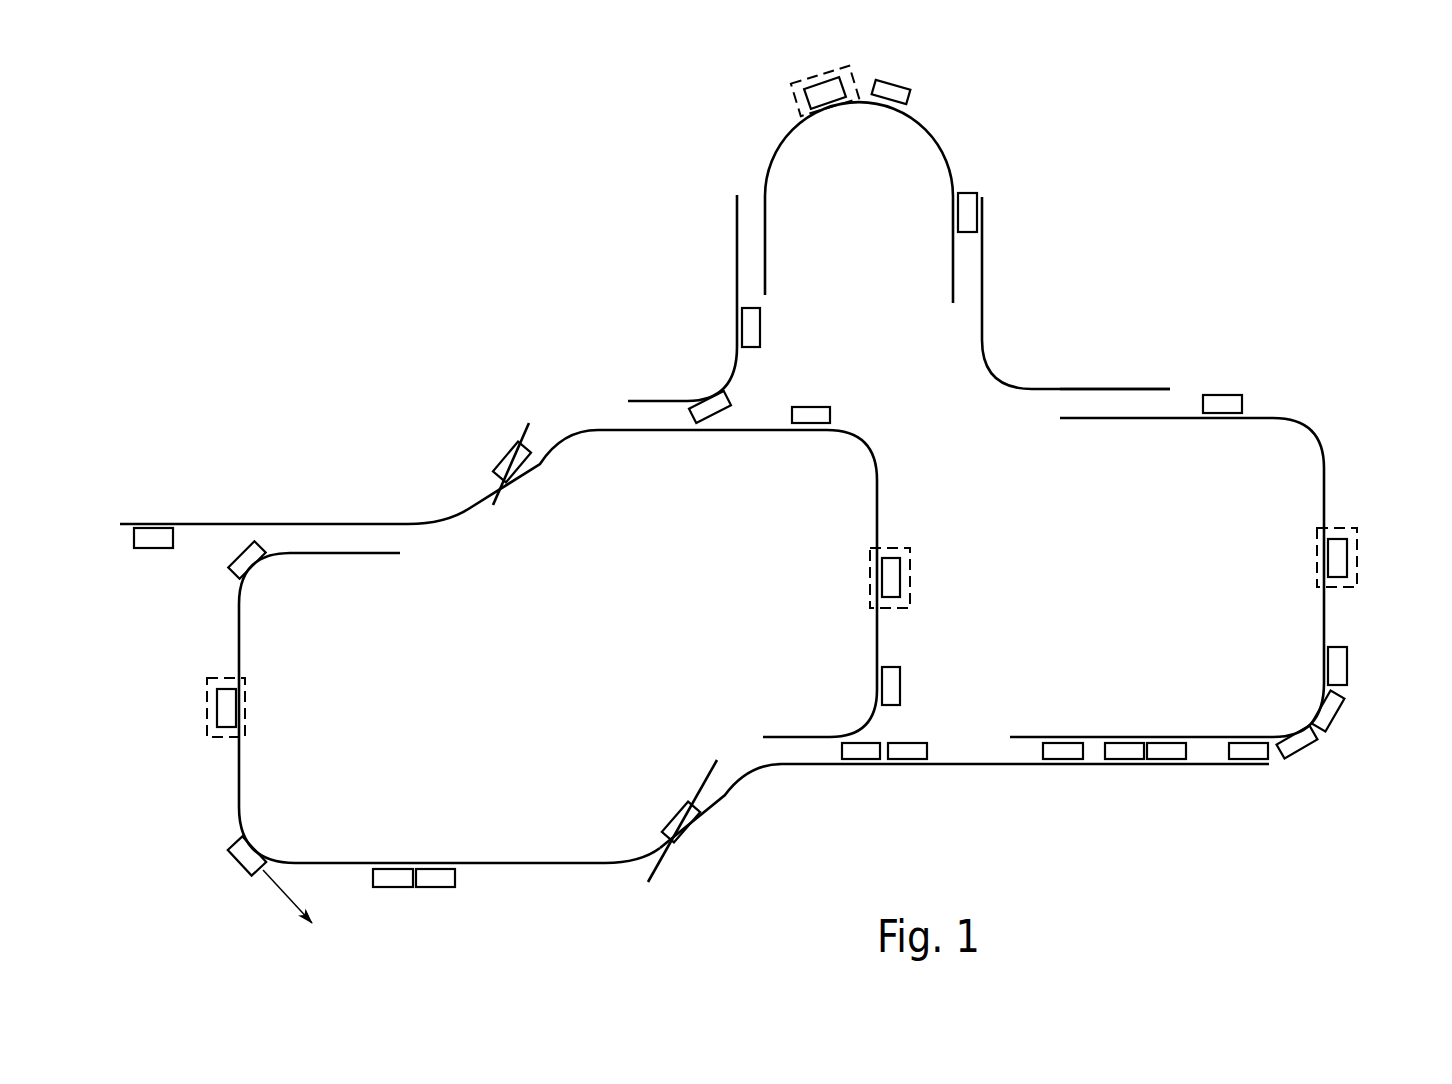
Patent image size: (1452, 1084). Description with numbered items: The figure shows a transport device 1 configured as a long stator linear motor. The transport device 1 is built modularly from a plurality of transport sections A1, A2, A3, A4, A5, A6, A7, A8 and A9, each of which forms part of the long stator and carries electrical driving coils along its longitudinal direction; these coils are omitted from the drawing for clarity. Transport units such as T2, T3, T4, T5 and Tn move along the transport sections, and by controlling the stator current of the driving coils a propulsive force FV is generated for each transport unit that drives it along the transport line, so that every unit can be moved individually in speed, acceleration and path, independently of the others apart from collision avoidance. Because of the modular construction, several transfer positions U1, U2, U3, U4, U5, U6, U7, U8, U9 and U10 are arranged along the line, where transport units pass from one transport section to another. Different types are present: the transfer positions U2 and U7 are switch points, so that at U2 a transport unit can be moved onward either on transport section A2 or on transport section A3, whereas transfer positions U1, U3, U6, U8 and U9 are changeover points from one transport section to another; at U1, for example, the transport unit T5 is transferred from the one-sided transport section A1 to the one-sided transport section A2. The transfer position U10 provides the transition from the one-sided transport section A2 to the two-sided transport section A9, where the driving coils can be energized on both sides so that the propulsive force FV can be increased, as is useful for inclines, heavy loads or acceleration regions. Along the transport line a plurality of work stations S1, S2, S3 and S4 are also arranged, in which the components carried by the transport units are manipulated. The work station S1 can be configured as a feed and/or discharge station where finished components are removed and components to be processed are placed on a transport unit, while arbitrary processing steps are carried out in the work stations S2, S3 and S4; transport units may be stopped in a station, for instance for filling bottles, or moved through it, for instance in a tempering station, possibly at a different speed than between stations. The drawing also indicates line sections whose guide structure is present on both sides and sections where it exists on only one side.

The transport device 1 is at (1052, 780).
The transport section A1 is at (541, 866).
The transport section A2 is at (970, 765).
The transport section A3 is at (880, 502).
The transport section A4 is at (1325, 473).
The transport section A5 is at (985, 300).
The transport section A6 is at (940, 140).
The transport section A7 is at (735, 237).
The transport section A8 is at (340, 523).
The transport section A9 is at (1160, 725).
The transfer position U1 is at (710, 822).
The transfer position U2 is at (797, 722).
The transfer position U3 is at (1218, 778).
The transfer position U4 is at (1099, 373).
The transfer position U5 is at (1005, 195).
The transfer position U6 is at (725, 272).
The transfer position U7 is at (694, 447).
The transfer position U8 is at (493, 447).
The transfer position U9 is at (245, 520).
The transfer position U10 is at (1065, 725).
The transport unit T2 is at (228, 707).
The transport unit T3 is at (243, 855).
The transport unit T4 is at (403, 877).
The transport unit T5 is at (862, 752).
The transport unit Tn is at (147, 538).
The work station S1 is at (205, 690).
The work station S2 is at (912, 577).
The work station S3 is at (1347, 557).
The work station S4 is at (790, 82).
The propulsive force FV is at (287, 906).